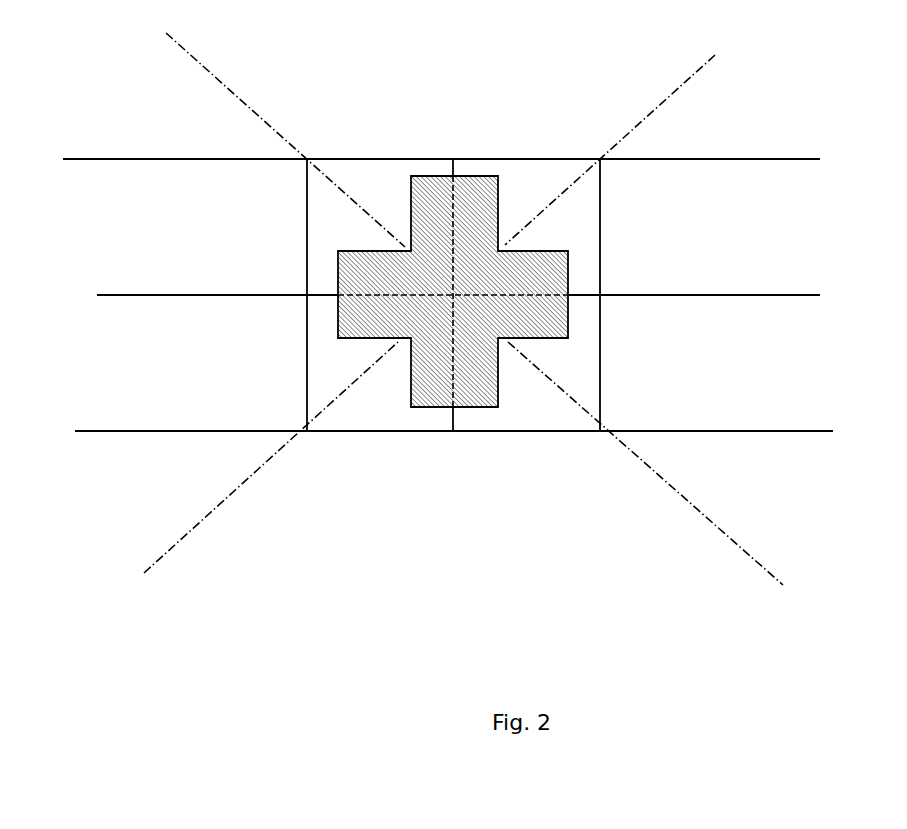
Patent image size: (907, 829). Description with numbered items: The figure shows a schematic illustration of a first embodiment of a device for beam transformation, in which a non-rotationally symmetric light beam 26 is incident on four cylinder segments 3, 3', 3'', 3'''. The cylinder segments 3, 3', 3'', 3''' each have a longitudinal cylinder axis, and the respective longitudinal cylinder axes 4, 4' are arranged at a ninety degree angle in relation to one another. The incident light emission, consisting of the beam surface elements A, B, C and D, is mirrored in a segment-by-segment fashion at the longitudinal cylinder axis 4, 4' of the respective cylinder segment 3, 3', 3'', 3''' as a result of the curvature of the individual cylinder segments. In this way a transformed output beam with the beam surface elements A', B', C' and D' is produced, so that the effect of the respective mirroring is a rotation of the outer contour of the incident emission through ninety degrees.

The cylinder segment 3 is at (629, 363).
The cylinder segment 3' is at (376, 439).
The cylinder segment 3'' is at (380, 159).
The cylinder segment 3''' is at (526, 154).
The longitudinal cylinder axis 4 is at (505, 314).
The longitudinal cylinder axis 4' is at (413, 309).
The non-rotationally symmetric light beam 26 is at (473, 390).